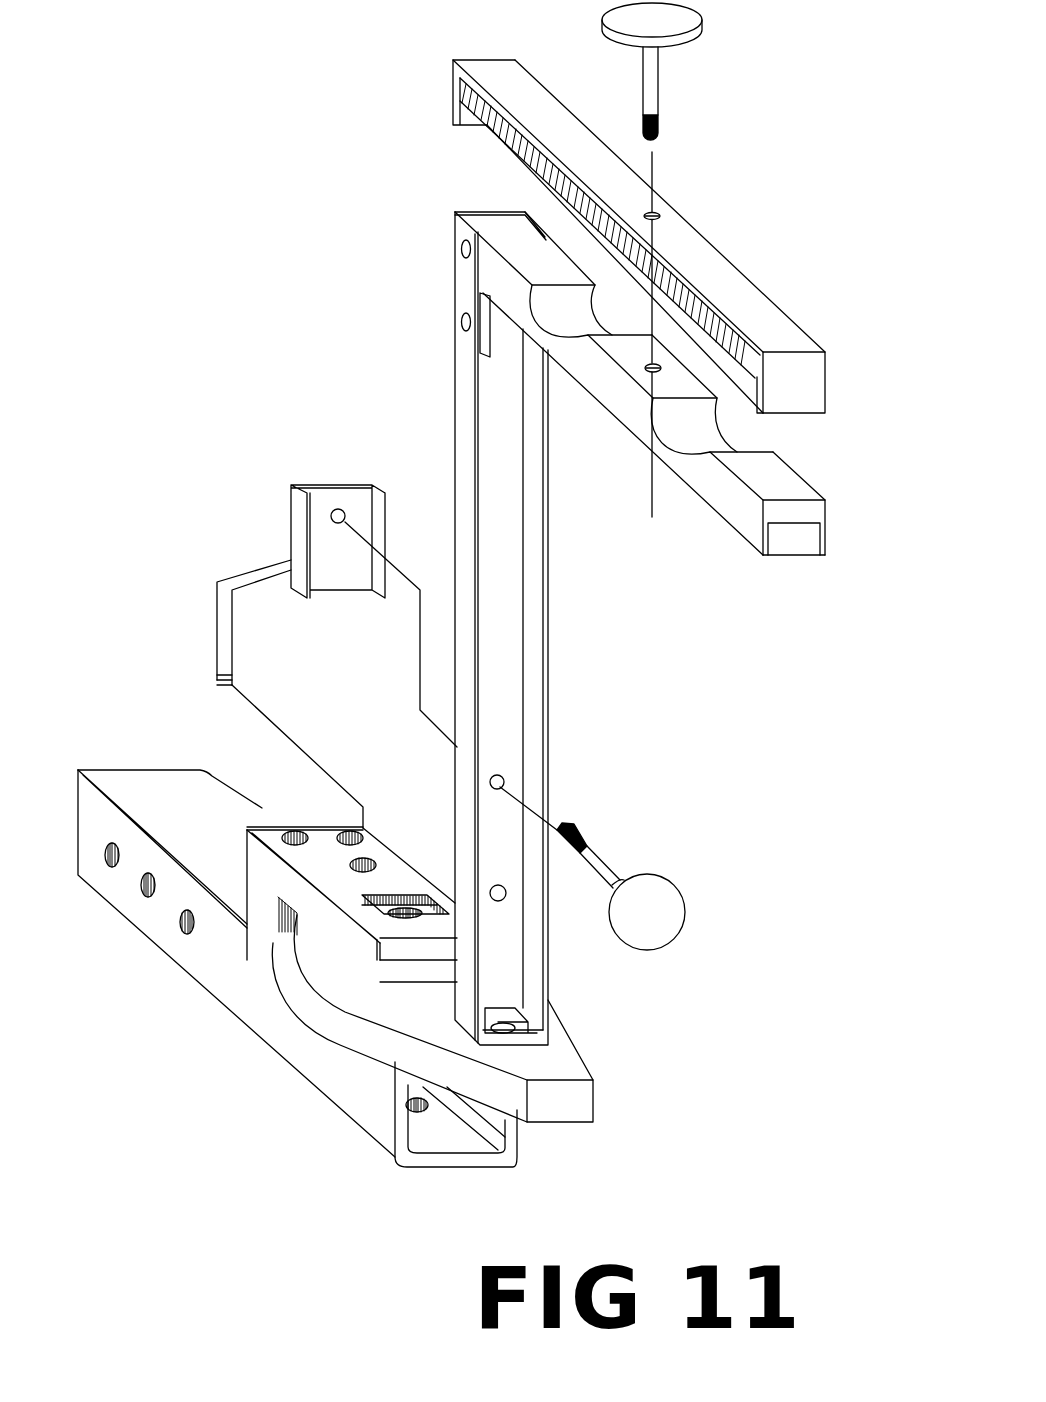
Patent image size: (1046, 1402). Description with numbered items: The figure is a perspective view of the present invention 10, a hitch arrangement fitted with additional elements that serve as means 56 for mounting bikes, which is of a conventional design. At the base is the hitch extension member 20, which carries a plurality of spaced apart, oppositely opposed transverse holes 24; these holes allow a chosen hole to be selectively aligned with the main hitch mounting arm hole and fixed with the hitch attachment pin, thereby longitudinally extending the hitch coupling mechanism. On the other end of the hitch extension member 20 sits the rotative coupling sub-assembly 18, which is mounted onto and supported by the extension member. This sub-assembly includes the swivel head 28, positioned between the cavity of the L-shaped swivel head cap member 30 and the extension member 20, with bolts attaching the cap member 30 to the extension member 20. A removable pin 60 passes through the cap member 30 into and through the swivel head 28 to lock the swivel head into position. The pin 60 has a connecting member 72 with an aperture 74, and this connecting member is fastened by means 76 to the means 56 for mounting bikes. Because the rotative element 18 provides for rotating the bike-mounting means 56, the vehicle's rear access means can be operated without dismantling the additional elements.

The present invention 10 is at (212, 1146).
The rotative coupling sub-assembly 18 is at (326, 1086).
The hitch extension member 20 is at (248, 1000).
The transverse holes 24 is at (110, 866).
The swivel head 28 is at (575, 1103).
The L-shaped swivel head cap member 30 is at (388, 880).
The means for mounting bikes 56 is at (752, 728).
The removable pin 60 is at (223, 609).
The connecting member 72 is at (298, 518).
The aperture 74 is at (338, 509).
The fastening means 76 is at (667, 912).